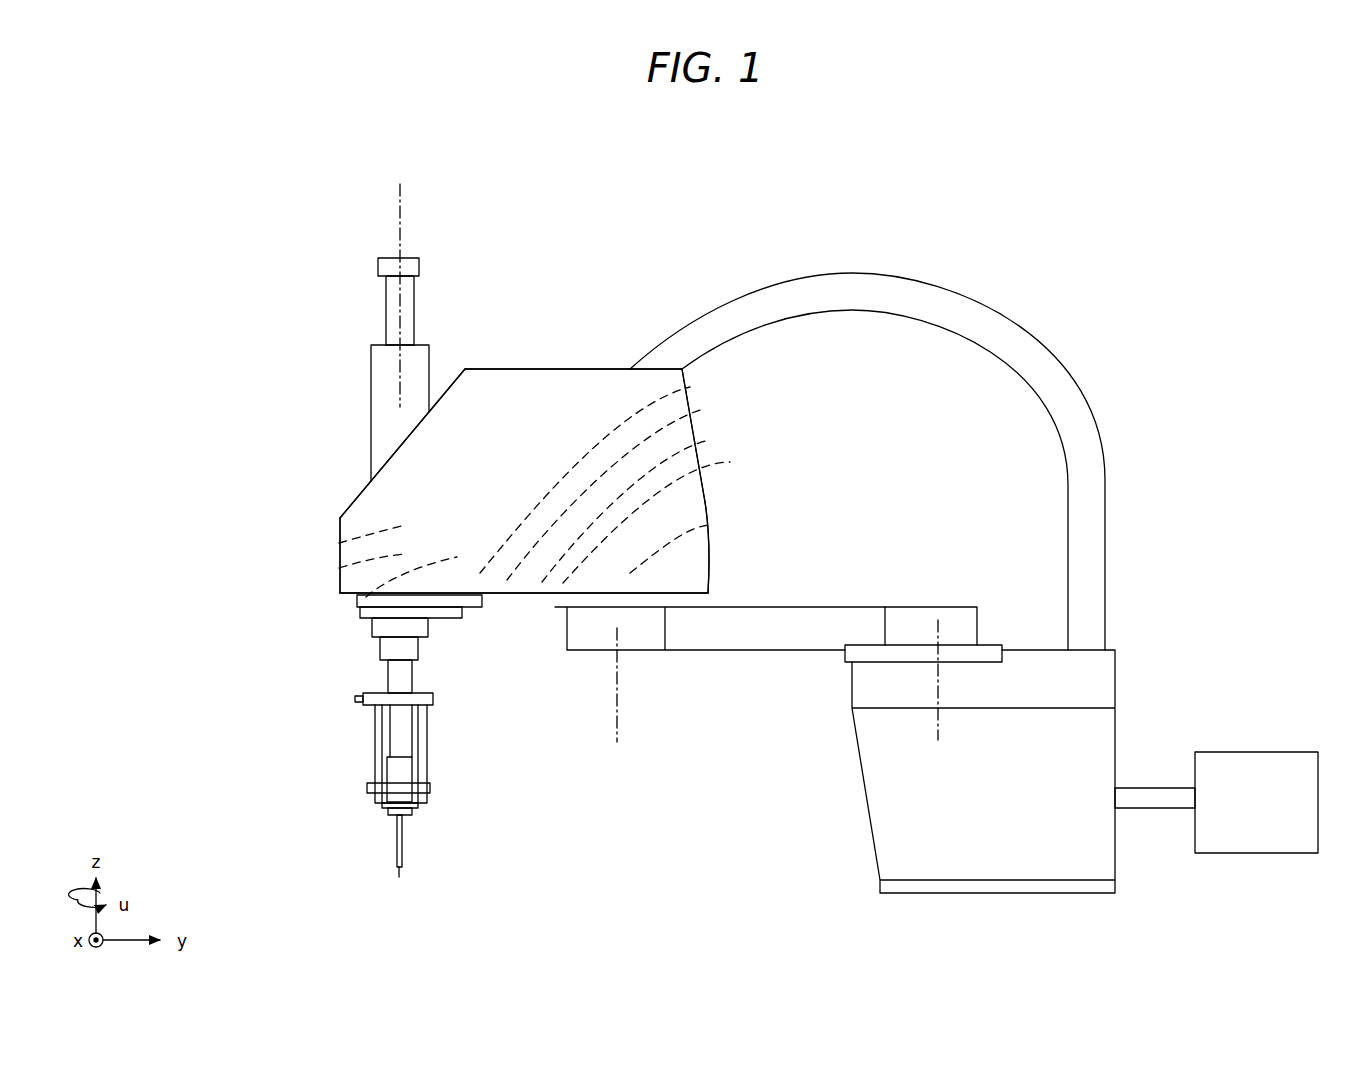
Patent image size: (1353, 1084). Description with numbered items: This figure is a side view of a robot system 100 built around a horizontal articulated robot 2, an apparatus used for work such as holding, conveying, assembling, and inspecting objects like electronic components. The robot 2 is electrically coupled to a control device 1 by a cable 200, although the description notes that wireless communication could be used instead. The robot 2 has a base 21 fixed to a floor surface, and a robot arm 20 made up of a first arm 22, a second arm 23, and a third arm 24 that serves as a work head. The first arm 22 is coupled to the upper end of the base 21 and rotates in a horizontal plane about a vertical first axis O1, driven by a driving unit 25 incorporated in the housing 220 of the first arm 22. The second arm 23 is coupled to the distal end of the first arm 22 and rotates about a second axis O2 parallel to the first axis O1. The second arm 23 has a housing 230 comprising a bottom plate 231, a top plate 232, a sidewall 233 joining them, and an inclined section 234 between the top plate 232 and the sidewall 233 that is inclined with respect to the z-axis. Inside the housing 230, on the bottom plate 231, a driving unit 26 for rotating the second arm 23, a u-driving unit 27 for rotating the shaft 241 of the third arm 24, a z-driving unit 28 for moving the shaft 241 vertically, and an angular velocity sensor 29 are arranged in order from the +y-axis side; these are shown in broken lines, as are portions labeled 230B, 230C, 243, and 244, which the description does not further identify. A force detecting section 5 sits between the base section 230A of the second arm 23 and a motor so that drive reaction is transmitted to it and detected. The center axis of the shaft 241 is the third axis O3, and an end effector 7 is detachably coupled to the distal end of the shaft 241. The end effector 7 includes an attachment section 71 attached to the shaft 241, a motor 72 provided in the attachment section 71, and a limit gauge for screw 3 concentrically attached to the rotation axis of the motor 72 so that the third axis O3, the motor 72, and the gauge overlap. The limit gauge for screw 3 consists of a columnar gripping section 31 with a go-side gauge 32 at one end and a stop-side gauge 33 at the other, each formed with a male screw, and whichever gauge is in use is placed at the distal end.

The robot system 100 is at (1031, 209).
The control device 1 is at (1291, 748).
The robot 2 is at (635, 246).
The limit gauge for screw 3 is at (393, 822).
The force detecting section 5 is at (730, 462).
The end effector 7 is at (458, 706).
The robot arm 20 is at (786, 184).
The base 21 is at (987, 818).
The first arm 22 is at (714, 620).
The second arm 23 is at (462, 449).
The third arm 24 is at (386, 293).
The driving unit 25 is at (945, 632).
The driving unit 26 is at (712, 525).
The u-driving unit 27 is at (710, 440).
The z-driving unit 28 is at (700, 410).
The angular velocity sensor 29 is at (690, 387).
The gripping section 31 is at (395, 845).
The go-side gauge 32 is at (397, 870).
The stop-side gauge 33 is at (413, 815).
The attachment section 71 is at (436, 790).
The motor 72 is at (398, 772).
The cable 200 is at (1153, 810).
The housing 220 is at (852, 632).
The housing 230 is at (513, 367).
The base section 230A is at (687, 578).
The rear inclined portion of housing 230B is at (705, 502).
The lower portion of housing 230C is at (357, 604).
The bottom plate 231 is at (527, 597).
The top plate 232 is at (590, 365).
The sidewall 233 is at (339, 532).
The inclined section 234 is at (454, 377).
The shaft 241 is at (386, 318).
The cable 243 is at (339, 543).
The cable 244 is at (339, 568).
The first axis O1 is at (938, 738).
The second axis O2 is at (612, 700).
The third axis O3 is at (402, 196).